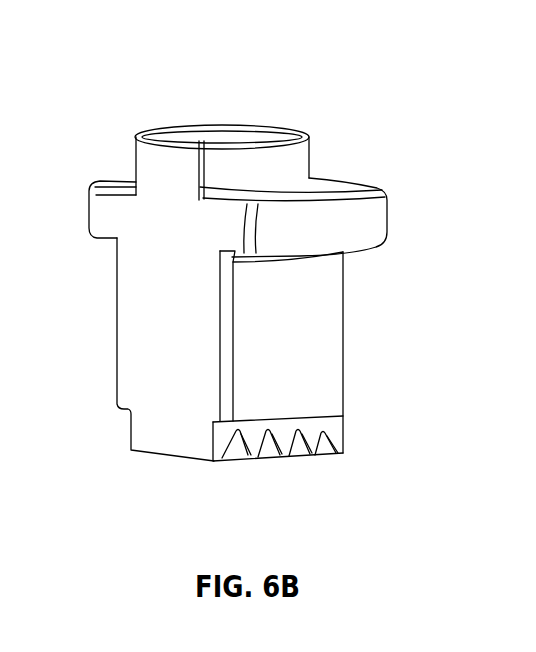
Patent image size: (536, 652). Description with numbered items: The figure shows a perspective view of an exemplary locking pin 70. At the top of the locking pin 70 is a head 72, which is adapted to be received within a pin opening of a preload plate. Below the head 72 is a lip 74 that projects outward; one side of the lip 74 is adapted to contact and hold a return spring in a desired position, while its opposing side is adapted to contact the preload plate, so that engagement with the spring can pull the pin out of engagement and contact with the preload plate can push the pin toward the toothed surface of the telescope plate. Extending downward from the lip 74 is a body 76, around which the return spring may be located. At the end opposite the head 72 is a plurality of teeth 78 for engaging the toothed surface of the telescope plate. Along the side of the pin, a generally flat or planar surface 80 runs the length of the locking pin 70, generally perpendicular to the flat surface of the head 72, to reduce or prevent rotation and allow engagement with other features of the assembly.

The locking pin 70 is at (186, 72).
The head 72 is at (253, 130).
The lip 74 is at (372, 208).
The body 76 is at (313, 340).
The teeth 78 is at (315, 435).
The generally flat or planar surface 80 is at (132, 352).